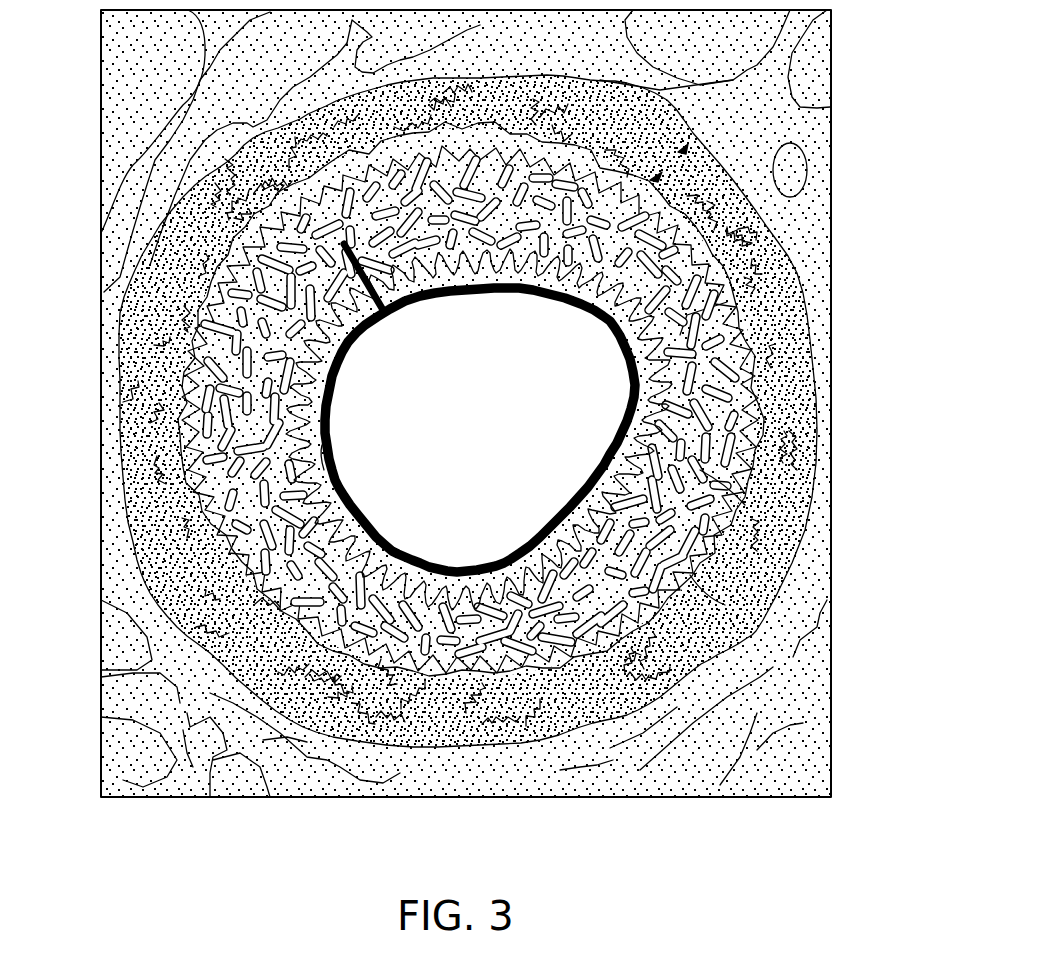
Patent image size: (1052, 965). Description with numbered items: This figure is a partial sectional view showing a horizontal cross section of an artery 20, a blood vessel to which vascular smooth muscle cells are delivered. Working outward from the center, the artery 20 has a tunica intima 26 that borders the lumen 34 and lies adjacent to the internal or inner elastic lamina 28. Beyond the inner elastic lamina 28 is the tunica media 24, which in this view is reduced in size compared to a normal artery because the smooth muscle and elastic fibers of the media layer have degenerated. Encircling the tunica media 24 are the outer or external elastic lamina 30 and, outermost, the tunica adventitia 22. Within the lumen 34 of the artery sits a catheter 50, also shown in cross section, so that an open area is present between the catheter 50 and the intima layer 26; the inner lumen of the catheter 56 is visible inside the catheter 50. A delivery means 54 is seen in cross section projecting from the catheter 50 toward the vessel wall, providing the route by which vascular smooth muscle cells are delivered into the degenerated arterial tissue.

The artery 20 is at (733, 80).
The tunica adventitia 22 is at (720, 195).
The tunica media 24 is at (687, 327).
The tunica intima 26 is at (668, 415).
The lumen 34 is at (637, 442).
The internal elastic lamina 28 is at (730, 490).
The external elastic lamina 30 is at (700, 565).
The inner lumen of the catheter 56 is at (512, 500).
The catheter 50 is at (322, 445).
The delivery means 54 is at (383, 312).